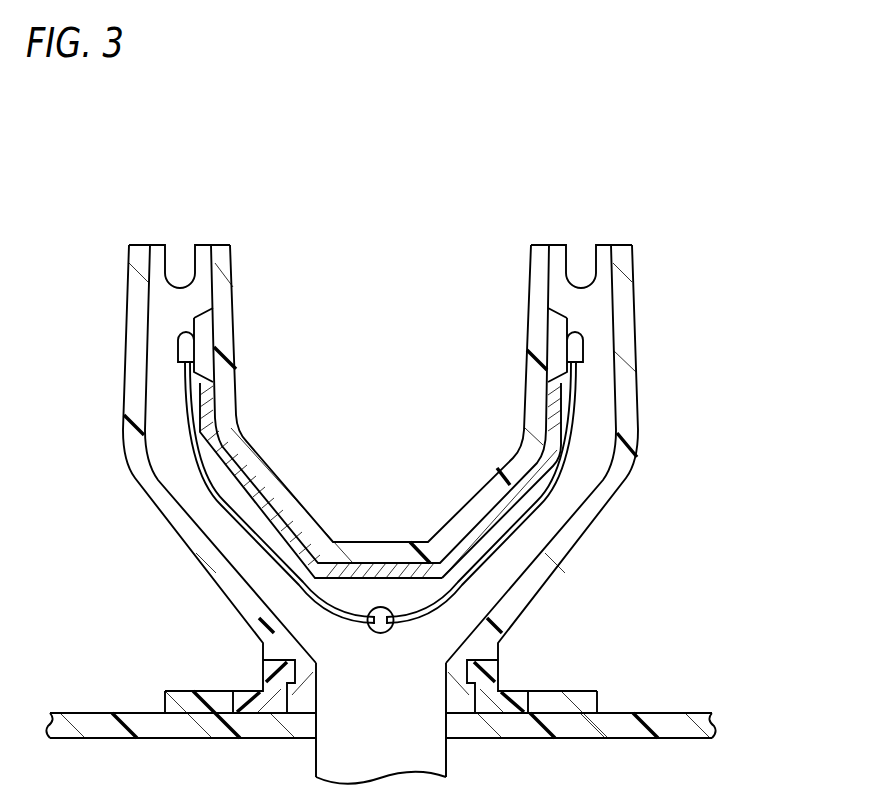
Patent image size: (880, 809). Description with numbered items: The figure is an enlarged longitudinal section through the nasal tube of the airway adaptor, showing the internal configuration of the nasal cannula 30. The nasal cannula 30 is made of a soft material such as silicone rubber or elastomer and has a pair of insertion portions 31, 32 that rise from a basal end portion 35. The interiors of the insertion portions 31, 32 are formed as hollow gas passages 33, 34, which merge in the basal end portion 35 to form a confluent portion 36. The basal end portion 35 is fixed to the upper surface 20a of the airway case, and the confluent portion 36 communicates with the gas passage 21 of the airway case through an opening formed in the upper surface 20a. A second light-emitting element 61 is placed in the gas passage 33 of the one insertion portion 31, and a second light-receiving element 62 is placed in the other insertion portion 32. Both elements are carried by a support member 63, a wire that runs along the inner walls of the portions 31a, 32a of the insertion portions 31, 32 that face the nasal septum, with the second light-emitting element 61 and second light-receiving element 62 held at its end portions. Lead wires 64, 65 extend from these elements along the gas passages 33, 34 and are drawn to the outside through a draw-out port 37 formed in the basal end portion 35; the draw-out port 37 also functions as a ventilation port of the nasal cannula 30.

The nasal cannula 30 is at (382, 458).
The insertion portion 31 is at (640, 472).
The insertion portion 32 is at (122, 472).
The portion opposed to the nasal septum 31a is at (478, 488).
The portion opposed to the nasal septum 32a is at (268, 467).
The gas passage 33 is at (600, 395).
The gas passage 34 is at (160, 395).
The basal end portion 35 is at (273, 652).
The confluent portion 36 is at (362, 657).
The draw-out port 37 is at (384, 632).
The second light-emitting element 61 is at (567, 319).
The second light-receiving element 62 is at (194, 319).
The support member 63 is at (412, 586).
The lead wire 64 is at (552, 503).
The lead wire 65 is at (222, 513).
The upper surface 20a is at (583, 690).
The gas passage 21 is at (432, 752).